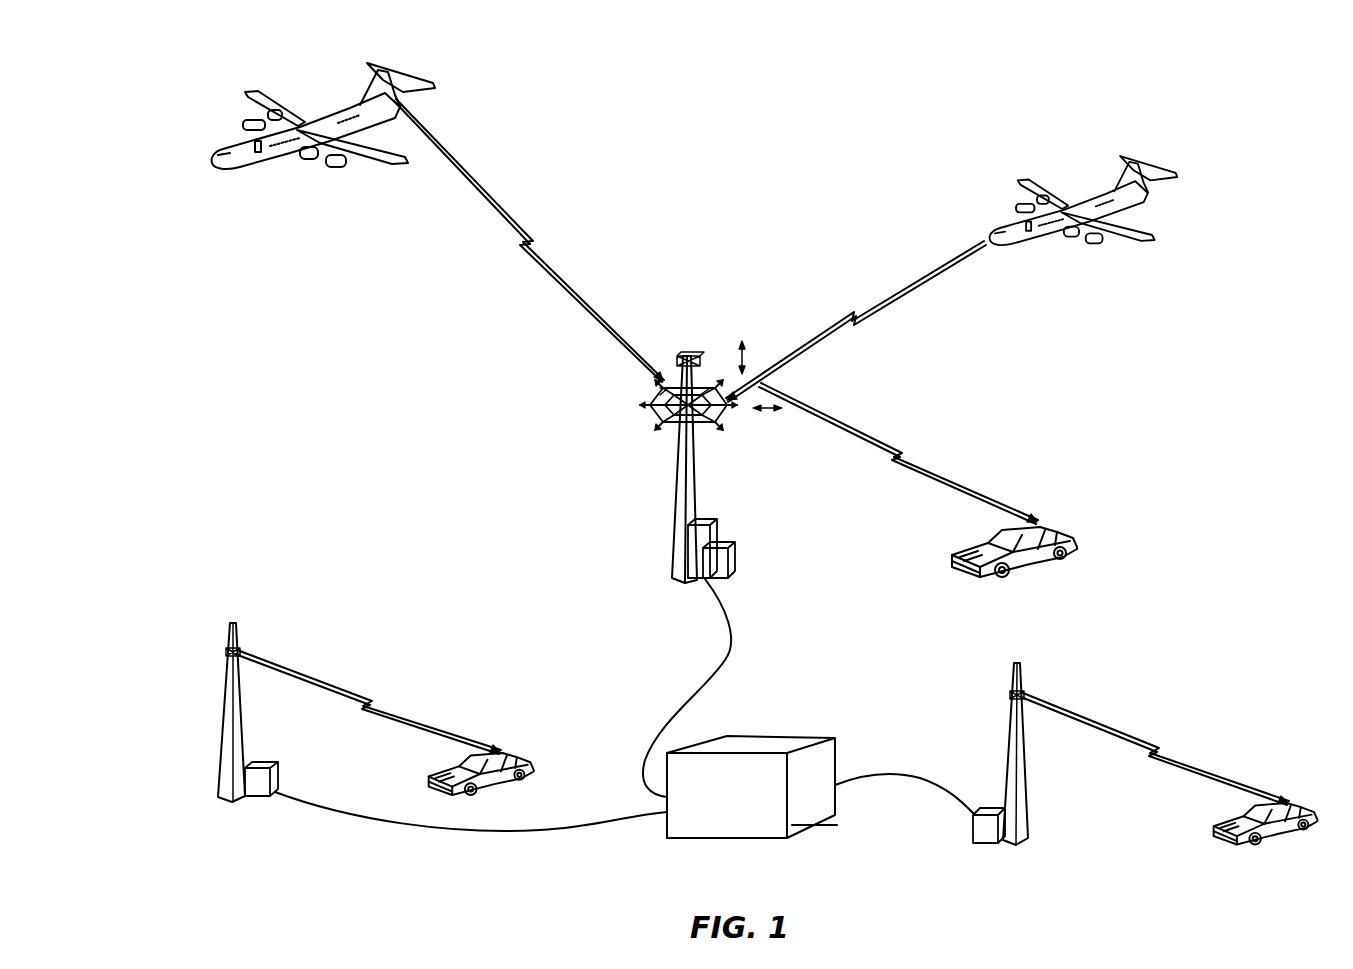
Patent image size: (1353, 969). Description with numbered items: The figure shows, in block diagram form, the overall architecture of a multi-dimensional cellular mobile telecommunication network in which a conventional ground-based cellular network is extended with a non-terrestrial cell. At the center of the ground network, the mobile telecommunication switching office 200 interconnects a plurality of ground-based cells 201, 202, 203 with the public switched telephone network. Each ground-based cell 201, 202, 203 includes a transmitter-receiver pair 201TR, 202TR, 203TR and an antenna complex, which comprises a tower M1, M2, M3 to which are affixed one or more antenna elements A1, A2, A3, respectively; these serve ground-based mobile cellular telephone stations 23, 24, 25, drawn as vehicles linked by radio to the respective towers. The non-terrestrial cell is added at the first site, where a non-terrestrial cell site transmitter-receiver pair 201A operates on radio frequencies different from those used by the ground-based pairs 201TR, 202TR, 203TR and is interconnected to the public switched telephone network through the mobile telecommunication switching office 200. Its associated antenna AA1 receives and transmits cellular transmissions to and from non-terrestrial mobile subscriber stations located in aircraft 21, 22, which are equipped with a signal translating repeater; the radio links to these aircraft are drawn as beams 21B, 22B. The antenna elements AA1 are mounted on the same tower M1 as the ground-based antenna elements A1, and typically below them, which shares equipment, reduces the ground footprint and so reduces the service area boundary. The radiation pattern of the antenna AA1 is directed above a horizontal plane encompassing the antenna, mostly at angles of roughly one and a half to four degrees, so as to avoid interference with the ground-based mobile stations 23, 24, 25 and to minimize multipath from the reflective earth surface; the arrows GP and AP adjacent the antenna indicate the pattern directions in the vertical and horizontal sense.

The aircraft 21 is at (248, 160).
The radio link beam to aircraft 21 21B is at (417, 83).
The aircraft 22 is at (1012, 237).
The radio link beam to aircraft 22 22B is at (1160, 180).
The ground-based mobile cellular telephone station 23 is at (1040, 525).
The ground-based mobile cellular telephone station 24 is at (500, 751).
The ground-based mobile cellular telephone station 25 is at (1287, 802).
The mobile telecommunication switching office 200 is at (803, 740).
The ground-based cell 201 is at (695, 432).
The non-terrestrial cell site transmitter-receiver pair 201A is at (713, 530).
The transmitter-receiver pair 201TR is at (736, 557).
The ground-based cell 202 is at (254, 712).
The transmitter-receiver pair 202TR is at (271, 777).
The ground-based cell 203 is at (1043, 776).
The transmitter-receiver pair 203TR is at (980, 840).
The antenna elements A1 is at (690, 353).
The non-terrestrial cell site antenna AA1 is at (650, 410).
The antenna elements A2 is at (228, 651).
The antenna elements A3 is at (1025, 694).
The tower M1 is at (700, 463).
The tower M2 is at (238, 710).
The tower M3 is at (1022, 750).
The gain pattern direction GP is at (759, 357).
The azimuth pattern direction AP is at (769, 421).